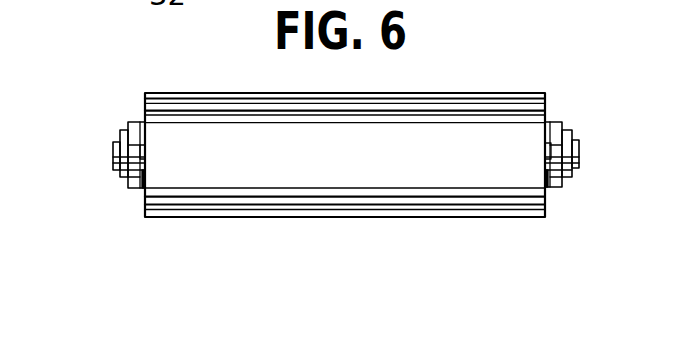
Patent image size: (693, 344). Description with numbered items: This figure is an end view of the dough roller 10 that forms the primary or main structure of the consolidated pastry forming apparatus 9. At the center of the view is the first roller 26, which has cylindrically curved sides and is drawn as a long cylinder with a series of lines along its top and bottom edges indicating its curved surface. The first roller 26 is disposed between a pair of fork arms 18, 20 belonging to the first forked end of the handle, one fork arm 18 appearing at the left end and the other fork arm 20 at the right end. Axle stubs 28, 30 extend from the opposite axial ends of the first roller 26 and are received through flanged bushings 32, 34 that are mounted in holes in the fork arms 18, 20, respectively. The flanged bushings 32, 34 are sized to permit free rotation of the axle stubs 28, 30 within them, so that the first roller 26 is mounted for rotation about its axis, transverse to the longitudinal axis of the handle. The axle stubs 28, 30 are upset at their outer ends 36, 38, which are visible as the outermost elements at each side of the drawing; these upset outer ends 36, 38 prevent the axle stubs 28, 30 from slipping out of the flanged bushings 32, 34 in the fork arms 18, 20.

The consolidated pastry forming apparatus 9 is at (467, 235).
The dough roller 10 is at (408, 78).
The fork arm 18 is at (133, 122).
The fork arm 20 is at (560, 122).
The first roller 26 is at (355, 153).
The axle stub 28 is at (142, 187).
The axle stub 30 is at (550, 184).
The flanged bushing 32 is at (120, 137).
The flanged bushing 34 is at (572, 132).
The outer end 36 is at (112, 158).
The outer end 38 is at (580, 149).